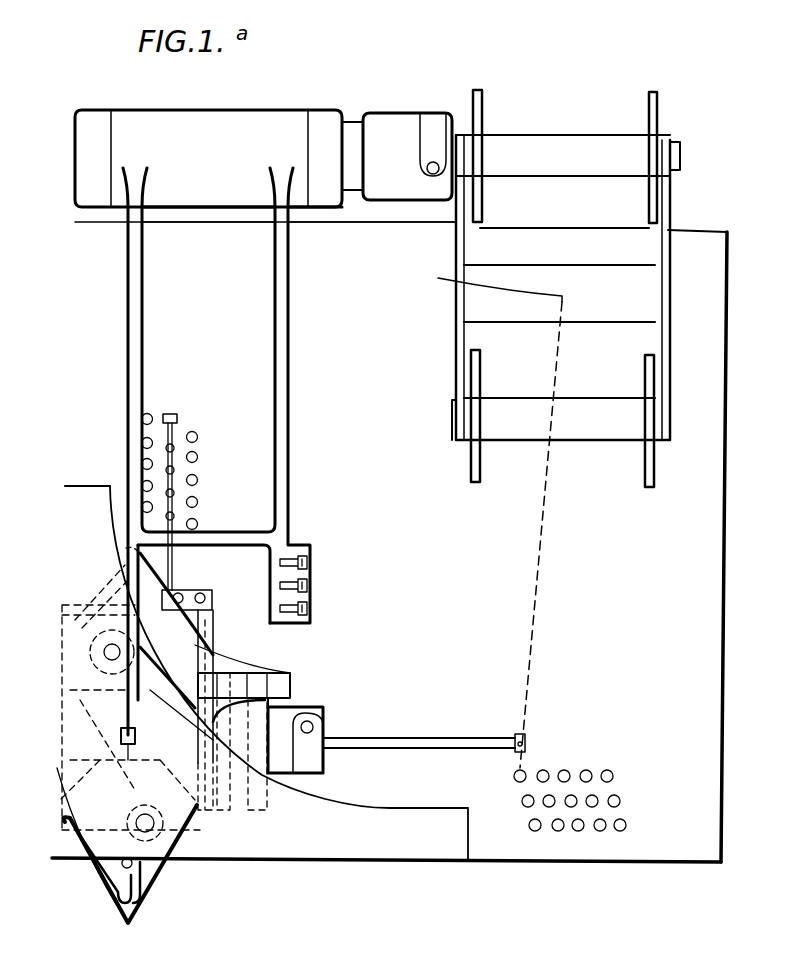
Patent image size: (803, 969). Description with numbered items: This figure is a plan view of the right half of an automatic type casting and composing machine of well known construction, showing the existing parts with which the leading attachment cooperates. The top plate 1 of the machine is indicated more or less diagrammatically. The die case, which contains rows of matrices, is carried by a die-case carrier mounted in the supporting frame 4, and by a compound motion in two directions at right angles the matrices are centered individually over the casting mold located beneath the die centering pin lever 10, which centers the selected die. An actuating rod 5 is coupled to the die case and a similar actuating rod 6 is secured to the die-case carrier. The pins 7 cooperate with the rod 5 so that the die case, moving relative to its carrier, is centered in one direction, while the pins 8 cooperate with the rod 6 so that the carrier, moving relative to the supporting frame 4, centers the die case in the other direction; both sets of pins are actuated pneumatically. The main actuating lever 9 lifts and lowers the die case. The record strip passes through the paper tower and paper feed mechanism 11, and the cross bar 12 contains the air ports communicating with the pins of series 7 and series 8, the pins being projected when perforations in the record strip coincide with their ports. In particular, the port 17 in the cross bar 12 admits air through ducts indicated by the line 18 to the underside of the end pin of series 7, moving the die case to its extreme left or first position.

The top plate 1 is at (708, 603).
The supporting frame 4 is at (160, 590).
The actuating rod 5 is at (410, 738).
The actuating rod 6 is at (177, 417).
The pins 7 is at (607, 770).
The pins 8 is at (197, 460).
The main actuating lever 9 is at (265, 422).
The die centering pin lever 10 is at (121, 735).
The paper tower and paper feed mechanism 11 is at (664, 205).
The cross bar 12 is at (630, 290).
The port 17 is at (486, 281).
The ducts 18 is at (545, 518).